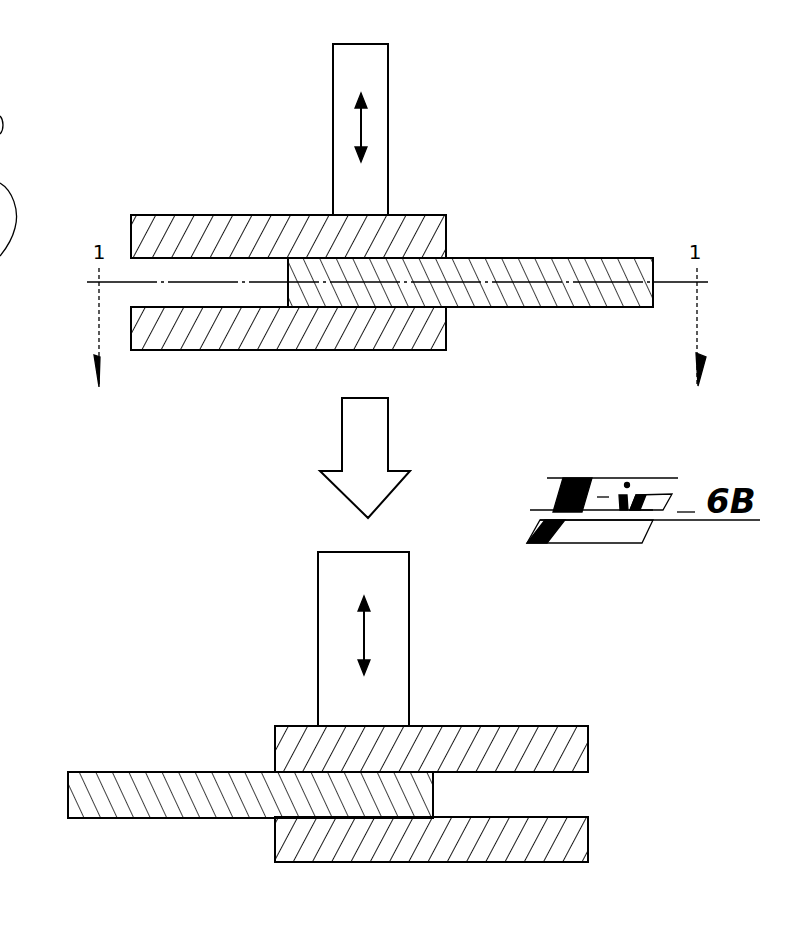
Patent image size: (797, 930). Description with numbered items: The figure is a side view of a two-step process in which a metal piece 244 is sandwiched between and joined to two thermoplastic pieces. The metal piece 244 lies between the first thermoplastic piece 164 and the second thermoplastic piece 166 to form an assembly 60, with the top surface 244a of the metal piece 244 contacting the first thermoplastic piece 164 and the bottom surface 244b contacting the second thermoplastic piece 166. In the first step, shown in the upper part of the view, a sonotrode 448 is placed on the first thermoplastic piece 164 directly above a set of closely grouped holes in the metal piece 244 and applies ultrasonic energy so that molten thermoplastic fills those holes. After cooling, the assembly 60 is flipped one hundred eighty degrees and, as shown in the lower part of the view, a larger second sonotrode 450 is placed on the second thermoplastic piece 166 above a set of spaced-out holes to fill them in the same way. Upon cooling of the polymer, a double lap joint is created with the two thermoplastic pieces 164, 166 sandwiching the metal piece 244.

The assembly 60 is at (220, 113).
The sonotrode 448 is at (388, 112).
The second sonotrode 450 is at (413, 607).
The first thermoplastic piece 164 is at (446, 232).
The second thermoplastic piece 166 is at (447, 327).
The metal piece 244 is at (652, 298).
The top surface 244a is at (558, 258).
The bottom surface 244b is at (587, 308).